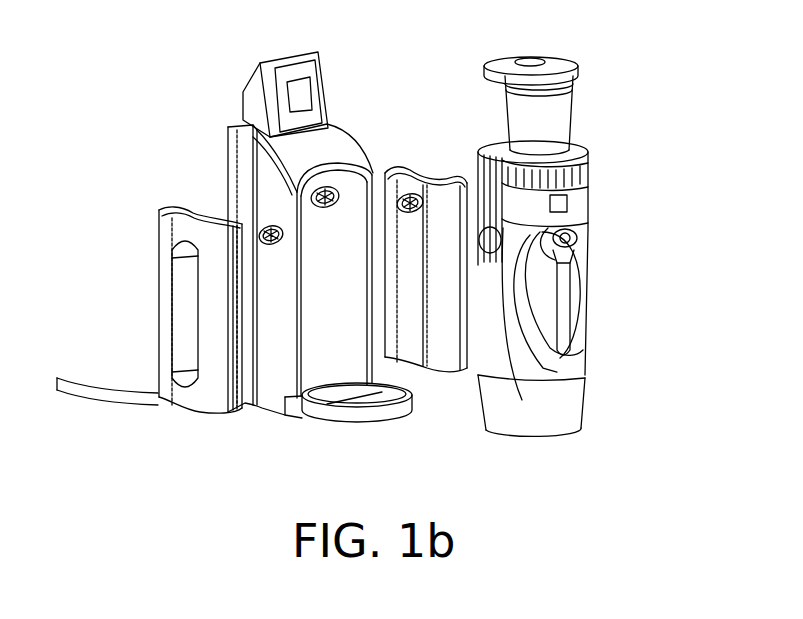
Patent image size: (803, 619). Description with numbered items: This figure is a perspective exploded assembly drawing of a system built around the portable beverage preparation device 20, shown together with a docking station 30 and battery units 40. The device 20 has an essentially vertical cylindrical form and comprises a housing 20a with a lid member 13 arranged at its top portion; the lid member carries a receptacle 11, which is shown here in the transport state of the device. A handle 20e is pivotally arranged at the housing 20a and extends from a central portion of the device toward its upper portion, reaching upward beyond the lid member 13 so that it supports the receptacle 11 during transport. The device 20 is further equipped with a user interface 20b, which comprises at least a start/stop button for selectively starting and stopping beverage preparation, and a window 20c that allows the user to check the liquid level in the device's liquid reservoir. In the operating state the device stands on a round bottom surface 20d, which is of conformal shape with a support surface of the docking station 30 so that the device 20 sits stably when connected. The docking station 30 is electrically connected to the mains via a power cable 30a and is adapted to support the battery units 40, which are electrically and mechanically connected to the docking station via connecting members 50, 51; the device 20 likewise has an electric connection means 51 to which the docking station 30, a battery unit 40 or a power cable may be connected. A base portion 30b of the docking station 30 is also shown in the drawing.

The receptacle 11 is at (557, 115).
The lid member 13 is at (577, 203).
The portable beverage preparation device 20 is at (583, 270).
The housing 20a is at (587, 293).
The user interface 20b is at (573, 238).
The window 20c is at (567, 347).
The bottom surface 20d is at (537, 442).
The handle 20e is at (572, 80).
The docking station 30 is at (352, 110).
The power cable 30a is at (95, 393).
The base plate 30b is at (387, 400).
The battery unit 40 is at (157, 230).
The connecting member 50 is at (320, 210).
The connecting member 51 is at (268, 226).